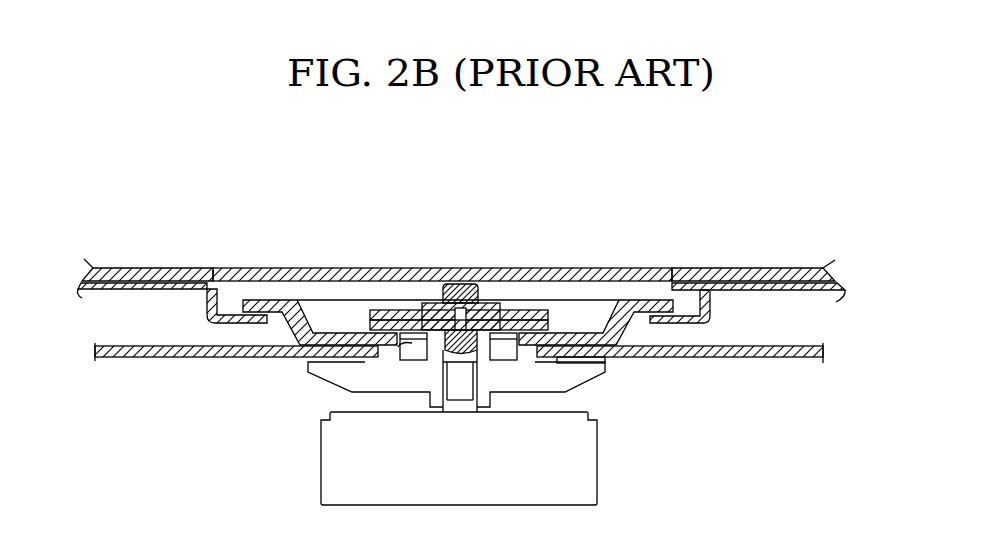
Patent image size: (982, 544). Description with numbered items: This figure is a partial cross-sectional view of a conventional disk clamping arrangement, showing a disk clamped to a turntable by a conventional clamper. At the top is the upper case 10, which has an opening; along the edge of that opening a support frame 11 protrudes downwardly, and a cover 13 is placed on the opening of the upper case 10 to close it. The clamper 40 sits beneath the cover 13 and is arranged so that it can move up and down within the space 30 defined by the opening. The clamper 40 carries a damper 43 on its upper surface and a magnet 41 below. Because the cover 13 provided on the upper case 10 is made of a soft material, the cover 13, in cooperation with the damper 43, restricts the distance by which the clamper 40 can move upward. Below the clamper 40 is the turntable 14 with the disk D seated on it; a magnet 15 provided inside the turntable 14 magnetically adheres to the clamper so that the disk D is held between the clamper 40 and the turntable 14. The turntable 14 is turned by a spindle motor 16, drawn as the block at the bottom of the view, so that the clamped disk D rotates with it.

The upper case 10 is at (746, 268).
The support frame 11 is at (710, 308).
The cover 13 is at (610, 268).
The turntable 14 is at (588, 370).
The magnet 15 is at (365, 362).
The spindle motor 16 is at (583, 462).
The space 30 is at (328, 290).
The clamper 40 is at (571, 312).
The magnet 41 is at (517, 312).
The damper 43 is at (462, 284).
The disk D is at (784, 357).